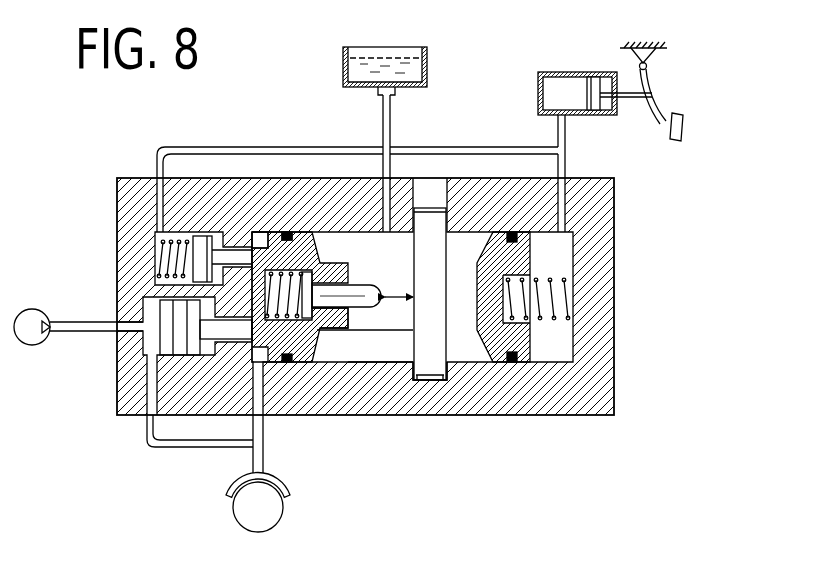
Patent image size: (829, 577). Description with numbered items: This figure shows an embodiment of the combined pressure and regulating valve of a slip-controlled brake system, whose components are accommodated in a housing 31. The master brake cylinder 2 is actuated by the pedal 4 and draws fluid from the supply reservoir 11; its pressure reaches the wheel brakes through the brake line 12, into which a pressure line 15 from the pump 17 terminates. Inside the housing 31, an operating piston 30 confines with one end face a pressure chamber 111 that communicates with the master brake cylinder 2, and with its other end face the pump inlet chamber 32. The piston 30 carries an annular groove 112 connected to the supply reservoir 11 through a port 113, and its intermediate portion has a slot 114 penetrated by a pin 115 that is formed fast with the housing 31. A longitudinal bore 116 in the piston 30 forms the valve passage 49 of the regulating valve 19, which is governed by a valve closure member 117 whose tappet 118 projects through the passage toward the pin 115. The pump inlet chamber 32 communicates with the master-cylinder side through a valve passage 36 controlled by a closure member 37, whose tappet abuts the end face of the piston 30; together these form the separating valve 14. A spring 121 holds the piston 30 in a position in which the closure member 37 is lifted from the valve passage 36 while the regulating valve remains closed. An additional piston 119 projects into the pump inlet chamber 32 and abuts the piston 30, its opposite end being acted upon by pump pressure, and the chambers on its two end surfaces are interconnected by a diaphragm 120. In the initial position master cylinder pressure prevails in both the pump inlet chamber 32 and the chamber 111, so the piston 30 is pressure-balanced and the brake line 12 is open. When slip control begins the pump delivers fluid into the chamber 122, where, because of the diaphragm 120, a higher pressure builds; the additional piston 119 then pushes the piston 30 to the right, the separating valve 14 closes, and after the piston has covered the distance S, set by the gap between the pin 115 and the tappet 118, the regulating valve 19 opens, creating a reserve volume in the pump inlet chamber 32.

The master brake cylinder 2 is at (615, 116).
The pedal 4 is at (668, 128).
The supply reservoir 11 is at (428, 70).
The brake line 12 is at (472, 152).
The separating valve 14 is at (256, 224).
The pressure line 15 is at (186, 449).
The pump 17 is at (32, 309).
The regulating valve 19 is at (359, 340).
The operating piston 30 is at (313, 363).
The housing 31 is at (532, 410).
The pump inlet chamber 32 is at (259, 238).
The valve passage 36 is at (247, 250).
The closure member 37 is at (233, 250).
The valve passage 49 is at (340, 272).
The pressure chamber 111 is at (566, 258).
The annular groove 112 is at (401, 352).
The port 113 is at (400, 158).
The slot 114 is at (382, 330).
The pin 115 is at (434, 368).
The longitudinal bore 116 is at (345, 292).
The valve closure member 117 is at (318, 331).
The tappet 118 is at (330, 262).
The additional piston 119 is at (117, 368).
The diaphragm 120 is at (152, 382).
The spring 121 is at (566, 340).
The chamber 122 is at (143, 340).
The distance s S is at (399, 282).